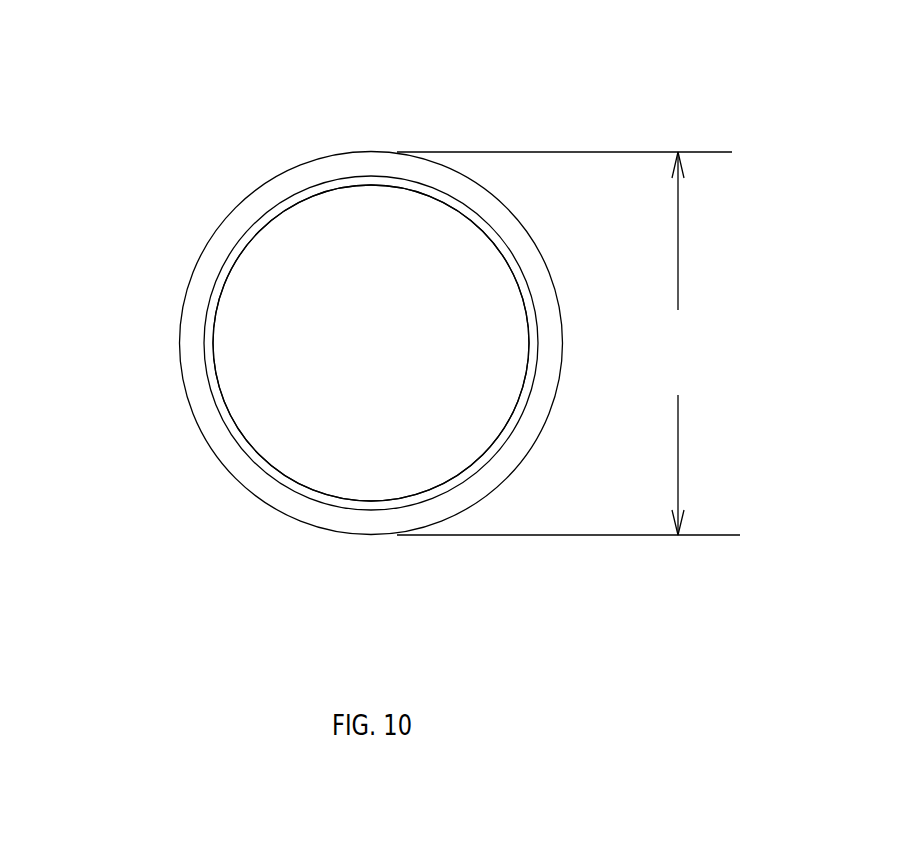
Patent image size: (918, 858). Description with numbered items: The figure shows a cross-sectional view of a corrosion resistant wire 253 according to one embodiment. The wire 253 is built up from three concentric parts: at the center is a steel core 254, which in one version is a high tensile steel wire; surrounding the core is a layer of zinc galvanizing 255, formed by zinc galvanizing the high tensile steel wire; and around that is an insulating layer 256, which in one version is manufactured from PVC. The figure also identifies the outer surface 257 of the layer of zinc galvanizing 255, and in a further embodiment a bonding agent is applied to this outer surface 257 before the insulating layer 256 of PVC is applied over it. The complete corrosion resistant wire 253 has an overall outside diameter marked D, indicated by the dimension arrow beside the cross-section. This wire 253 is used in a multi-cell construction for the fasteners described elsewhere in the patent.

The corrosion resistant wire 253 is at (390, 97).
The steel core 254 is at (250, 392).
The layer of zinc galvanizing 255 is at (212, 354).
The insulating layer 256 is at (252, 207).
The outer surface 257 is at (205, 305).